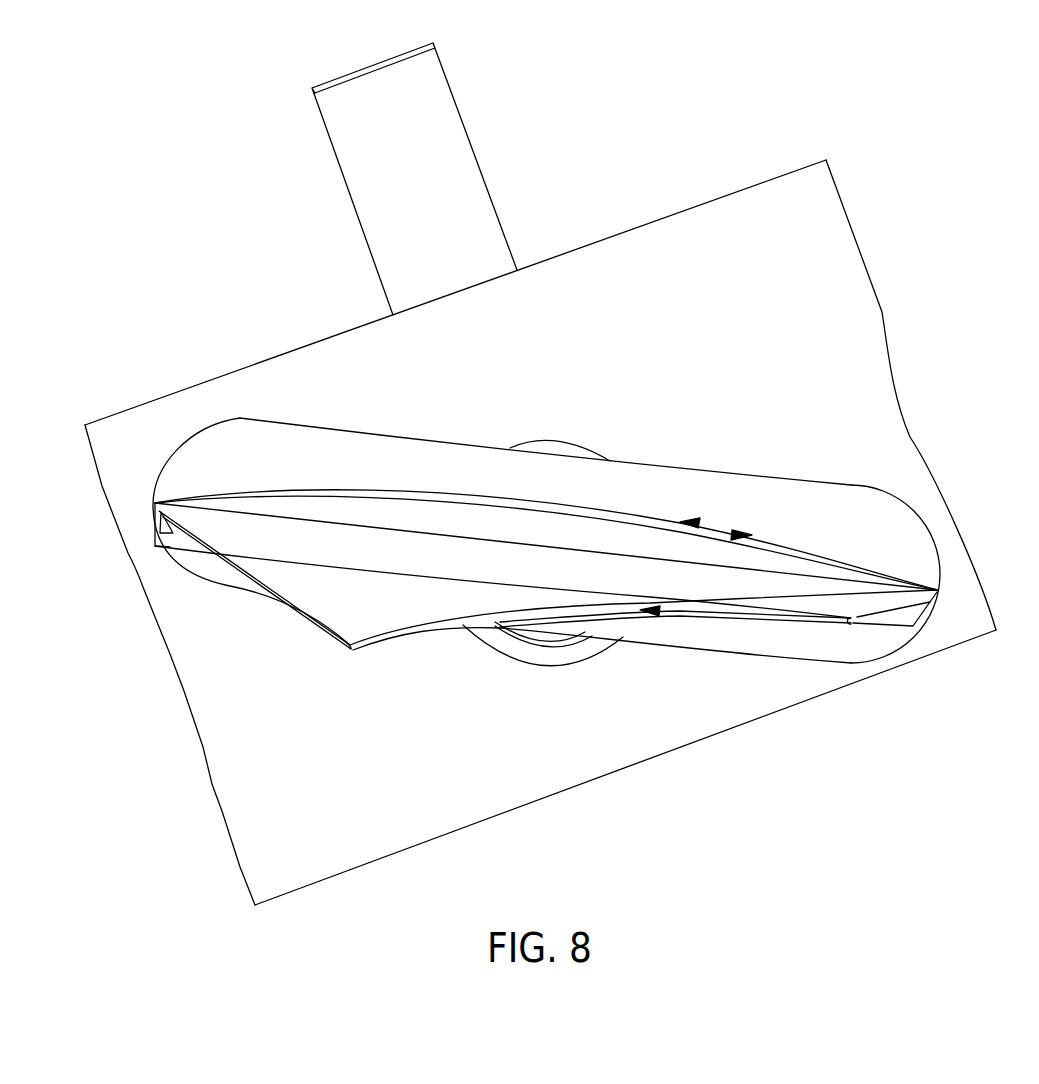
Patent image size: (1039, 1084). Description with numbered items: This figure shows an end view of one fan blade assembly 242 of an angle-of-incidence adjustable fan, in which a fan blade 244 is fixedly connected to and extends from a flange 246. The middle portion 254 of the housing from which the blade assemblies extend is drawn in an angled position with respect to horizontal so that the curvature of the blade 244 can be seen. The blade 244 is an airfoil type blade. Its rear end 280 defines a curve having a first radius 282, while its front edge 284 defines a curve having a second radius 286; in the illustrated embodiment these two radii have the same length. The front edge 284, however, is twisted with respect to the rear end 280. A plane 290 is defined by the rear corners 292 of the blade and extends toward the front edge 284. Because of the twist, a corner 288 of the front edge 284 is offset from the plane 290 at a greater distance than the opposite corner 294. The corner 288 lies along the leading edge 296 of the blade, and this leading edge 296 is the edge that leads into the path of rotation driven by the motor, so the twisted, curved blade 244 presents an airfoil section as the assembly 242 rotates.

The middle portion 254 is at (113, 432).
The flange 246 is at (220, 450).
The rear corners 292 is at (153, 505).
The plane 290 is at (458, 538).
The first radius 282 is at (713, 528).
The rear end 280 is at (850, 563).
The corner 294 is at (851, 626).
The second radius 286 is at (680, 613).
The leading edge 296 is at (310, 625).
The fan blade 244 is at (255, 542).
The fan blade assembly 242 is at (267, 610).
The corner 288 is at (347, 650).
The front edge 284 is at (380, 648).